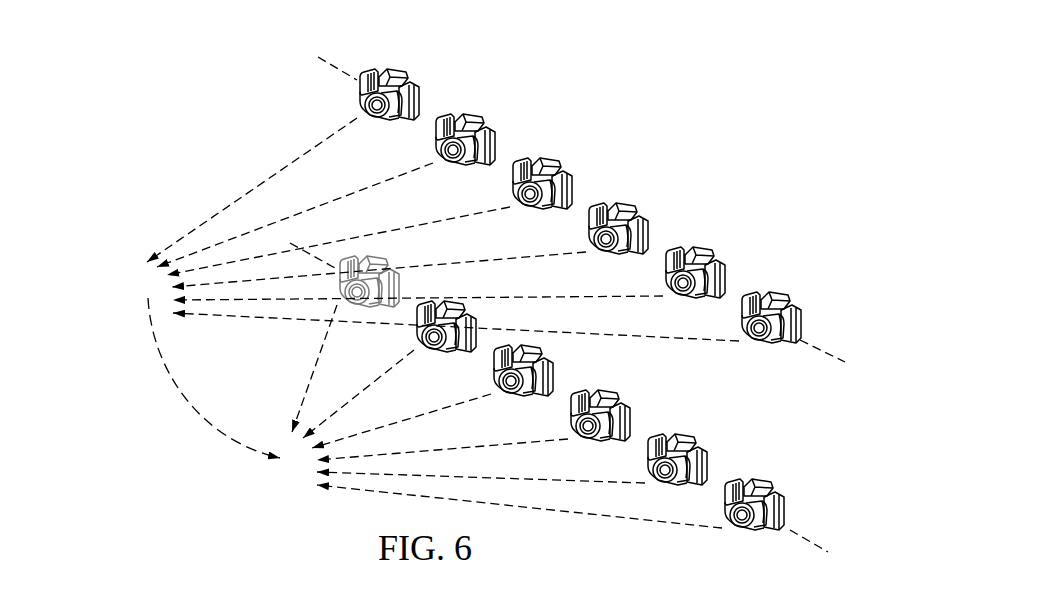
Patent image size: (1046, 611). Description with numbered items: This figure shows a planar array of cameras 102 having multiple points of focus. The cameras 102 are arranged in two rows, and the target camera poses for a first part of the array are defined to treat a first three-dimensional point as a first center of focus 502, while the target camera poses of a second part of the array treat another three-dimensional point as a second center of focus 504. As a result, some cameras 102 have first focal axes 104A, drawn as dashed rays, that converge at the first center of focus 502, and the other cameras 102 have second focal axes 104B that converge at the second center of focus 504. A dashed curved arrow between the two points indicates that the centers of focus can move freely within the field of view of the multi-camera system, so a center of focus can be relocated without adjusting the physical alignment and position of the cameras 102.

The cameras 102 is at (419, 52).
The first focal axes 104A is at (260, 185).
The second focal axes 104B is at (602, 515).
The first center of focus 502 is at (140, 290).
The second center of focus 504 is at (290, 477).